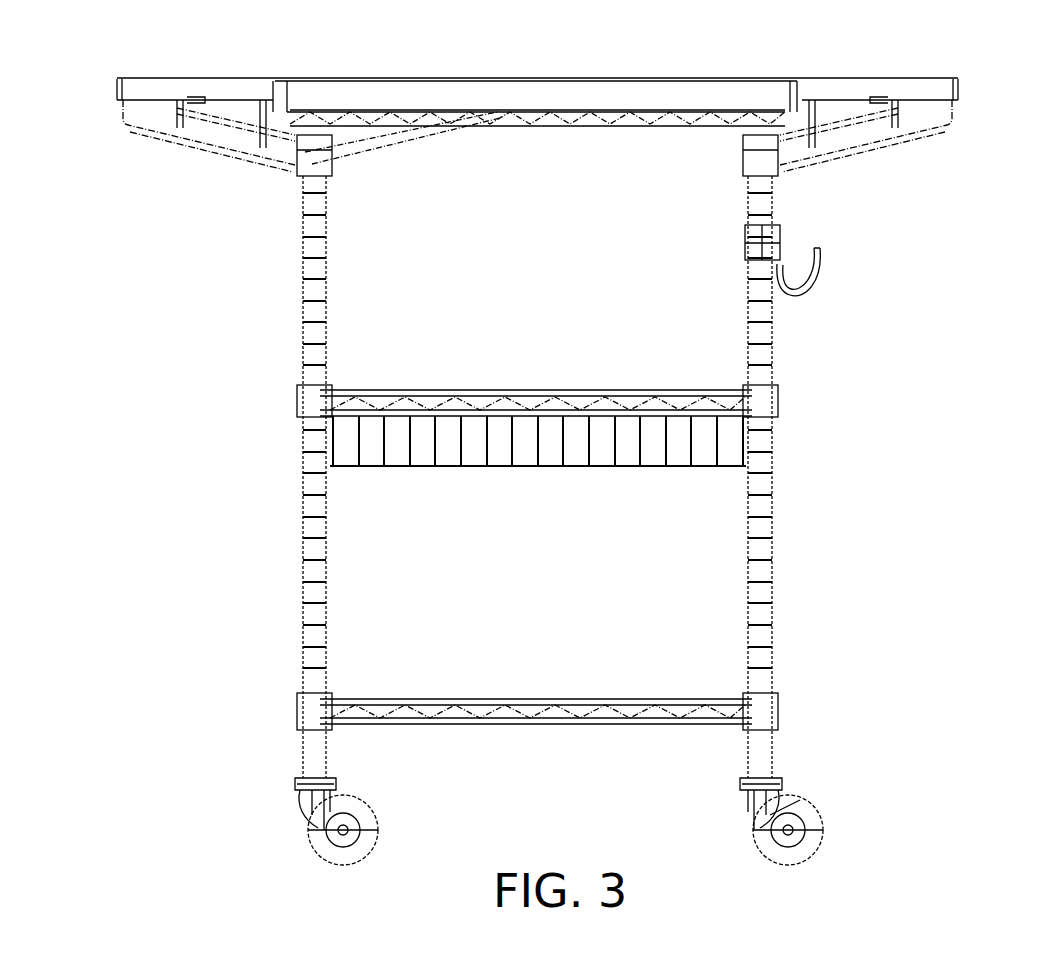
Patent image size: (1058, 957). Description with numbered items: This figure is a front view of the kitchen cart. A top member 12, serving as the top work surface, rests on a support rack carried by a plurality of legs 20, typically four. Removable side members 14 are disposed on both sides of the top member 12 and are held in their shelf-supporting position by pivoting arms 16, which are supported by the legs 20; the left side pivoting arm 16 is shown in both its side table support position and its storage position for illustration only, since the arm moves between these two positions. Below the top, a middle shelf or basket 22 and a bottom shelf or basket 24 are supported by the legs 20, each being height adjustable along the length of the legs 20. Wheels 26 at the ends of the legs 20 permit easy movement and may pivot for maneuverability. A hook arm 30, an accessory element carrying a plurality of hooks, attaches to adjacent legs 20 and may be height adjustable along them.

The top member 12 is at (612, 85).
The removable side members 14 is at (158, 80).
The pivoting arms 16 is at (850, 152).
The legs 20 is at (770, 512).
The middle shelf or basket 22 is at (510, 390).
The bottom shelf or basket 24 is at (562, 700).
The wheels 26 is at (812, 814).
The hook arm 30 is at (747, 250).